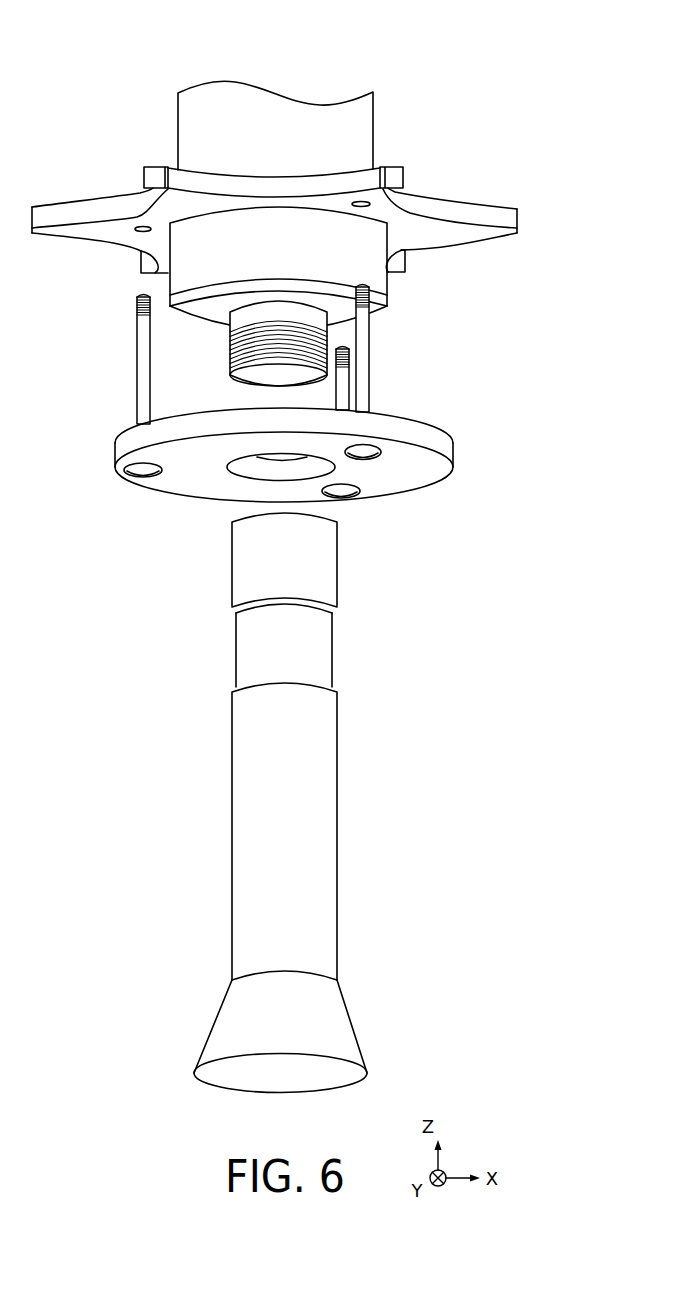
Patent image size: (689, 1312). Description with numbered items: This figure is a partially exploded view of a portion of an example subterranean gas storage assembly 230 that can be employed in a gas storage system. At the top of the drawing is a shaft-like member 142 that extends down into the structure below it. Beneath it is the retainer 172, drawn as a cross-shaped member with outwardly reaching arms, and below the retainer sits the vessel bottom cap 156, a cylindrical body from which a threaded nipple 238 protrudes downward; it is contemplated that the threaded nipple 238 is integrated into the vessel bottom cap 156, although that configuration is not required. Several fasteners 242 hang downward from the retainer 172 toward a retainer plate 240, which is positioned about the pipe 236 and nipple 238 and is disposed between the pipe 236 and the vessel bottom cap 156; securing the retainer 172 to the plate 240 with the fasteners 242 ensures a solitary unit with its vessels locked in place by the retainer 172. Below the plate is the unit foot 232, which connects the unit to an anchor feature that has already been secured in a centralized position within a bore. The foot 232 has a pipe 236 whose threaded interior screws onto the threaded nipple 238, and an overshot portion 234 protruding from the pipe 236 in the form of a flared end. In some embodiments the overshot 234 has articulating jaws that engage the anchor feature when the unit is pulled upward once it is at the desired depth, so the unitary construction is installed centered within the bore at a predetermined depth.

The subterranean gas storage assembly 230 is at (406, 53).
The shaft 142 is at (295, 141).
The retainer 172 is at (95, 203).
The vessel bottom cap 156 is at (297, 256).
The threaded nipple 238 is at (221, 357).
The fasteners 242 is at (137, 361).
The retainer plate 240 is at (176, 475).
The unit foot 232 is at (188, 754).
The pipe 236 is at (338, 788).
The overshot portion 234 is at (365, 1016).